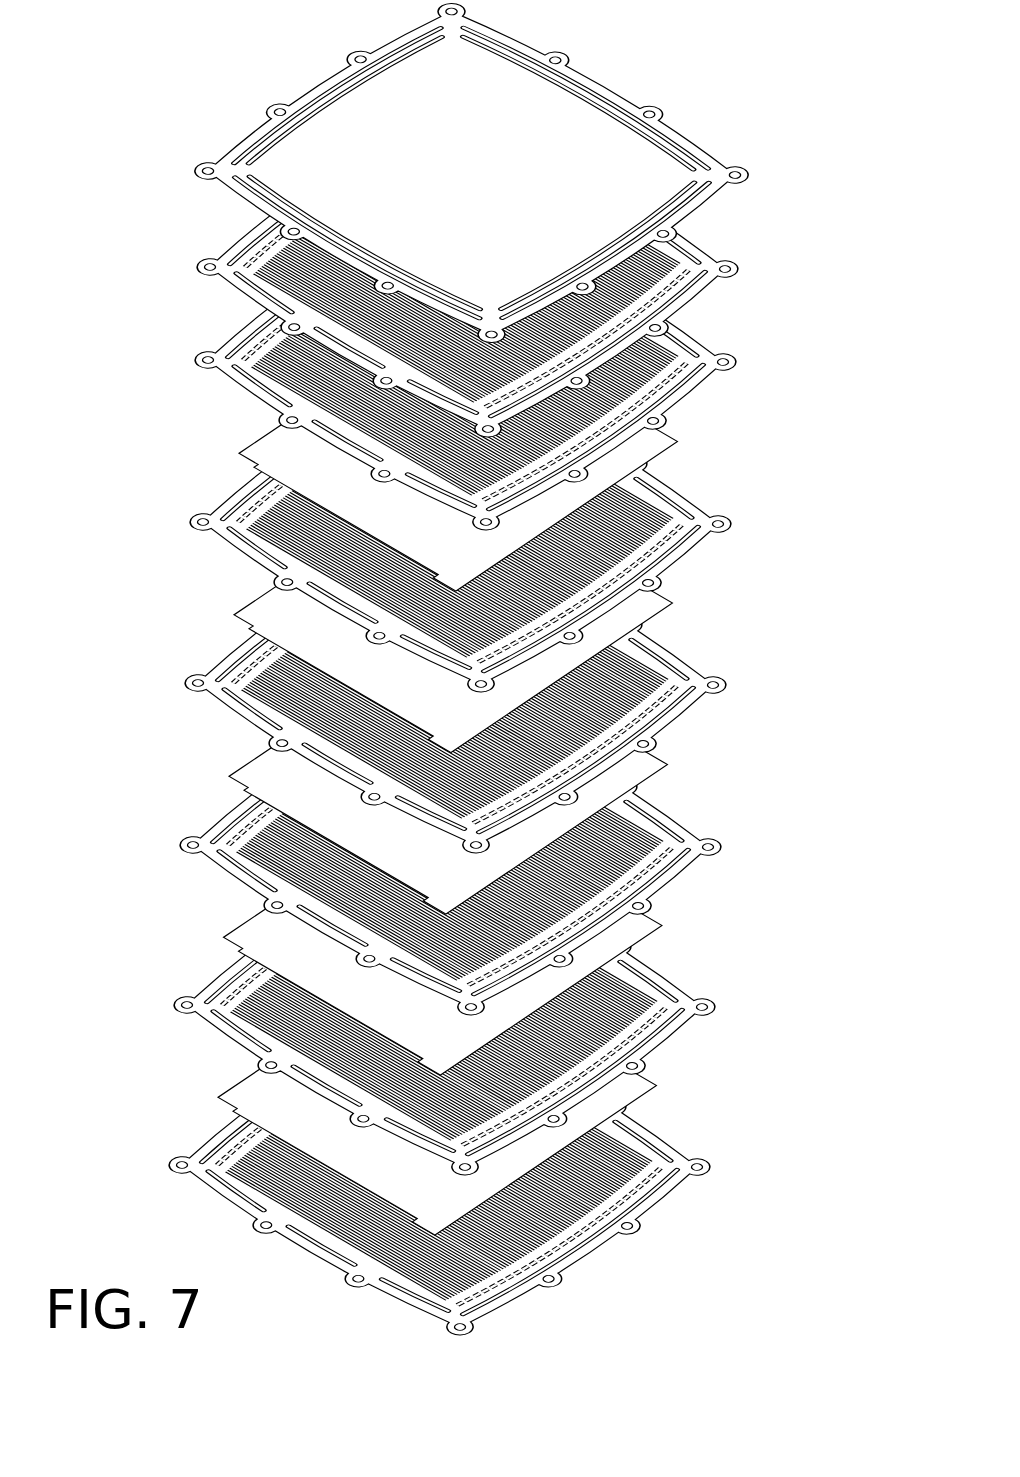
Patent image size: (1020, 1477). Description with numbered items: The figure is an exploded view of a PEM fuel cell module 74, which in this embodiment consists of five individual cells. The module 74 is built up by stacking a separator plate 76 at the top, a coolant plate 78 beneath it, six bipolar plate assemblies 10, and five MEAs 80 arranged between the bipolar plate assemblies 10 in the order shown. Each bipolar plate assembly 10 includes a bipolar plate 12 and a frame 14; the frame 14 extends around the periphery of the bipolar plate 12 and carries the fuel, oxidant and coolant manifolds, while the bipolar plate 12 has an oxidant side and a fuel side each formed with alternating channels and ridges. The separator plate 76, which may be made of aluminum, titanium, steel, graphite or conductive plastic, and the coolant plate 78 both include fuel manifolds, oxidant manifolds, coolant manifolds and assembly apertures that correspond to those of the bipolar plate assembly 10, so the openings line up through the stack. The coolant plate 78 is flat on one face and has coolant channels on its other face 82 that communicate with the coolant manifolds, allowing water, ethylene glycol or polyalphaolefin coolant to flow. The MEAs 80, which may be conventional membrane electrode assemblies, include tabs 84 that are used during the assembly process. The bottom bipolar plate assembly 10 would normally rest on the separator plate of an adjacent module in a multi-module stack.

The bipolar plate assembly 10 is at (507, 675).
The bipolar plate 12 is at (479, 361).
The frame 14 is at (700, 393).
The PEM fuel cell module 74 is at (509, 226).
The separator plate 76 is at (596, 93).
The coolant plate 78 is at (469, 268).
The MEA 80 is at (476, 450).
The face 82 is at (265, 264).
The tab 84 is at (252, 468).